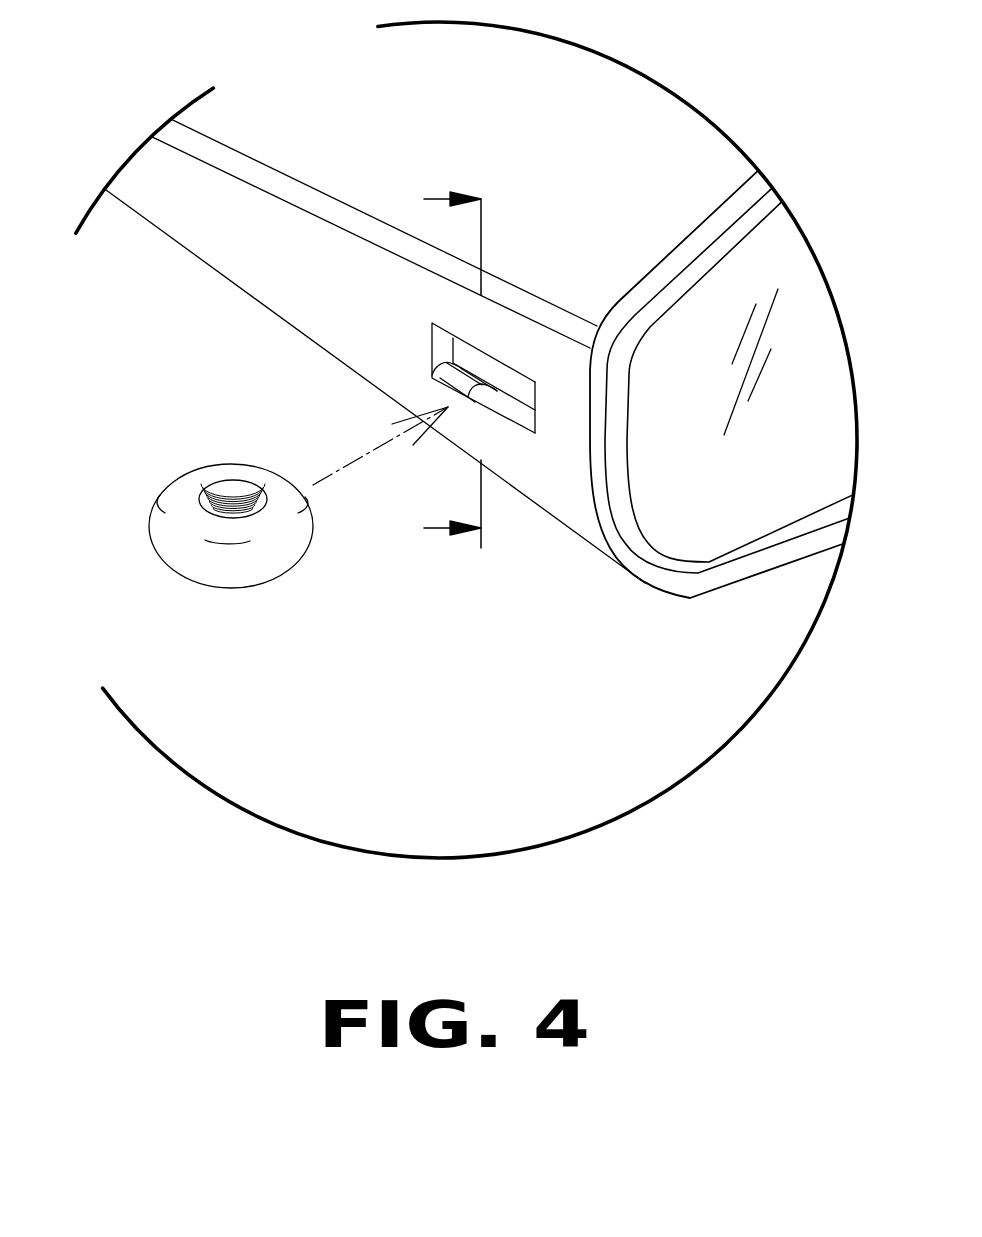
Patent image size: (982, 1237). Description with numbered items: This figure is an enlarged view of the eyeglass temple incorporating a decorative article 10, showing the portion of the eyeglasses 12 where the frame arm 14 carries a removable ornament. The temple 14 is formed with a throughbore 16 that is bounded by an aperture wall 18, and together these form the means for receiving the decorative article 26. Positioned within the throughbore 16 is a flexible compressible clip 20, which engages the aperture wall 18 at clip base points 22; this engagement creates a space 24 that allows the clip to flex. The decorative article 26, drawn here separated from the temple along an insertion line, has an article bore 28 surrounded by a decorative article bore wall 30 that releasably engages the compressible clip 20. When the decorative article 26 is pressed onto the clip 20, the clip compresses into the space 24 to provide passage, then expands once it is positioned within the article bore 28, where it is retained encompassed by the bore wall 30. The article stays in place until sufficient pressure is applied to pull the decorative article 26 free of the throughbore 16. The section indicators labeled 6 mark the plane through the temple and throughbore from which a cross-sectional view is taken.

The eyeglass temple incorporating decorative article 10 is at (333, 89).
The eyeglasses 12 is at (680, 597).
The frame arm 14 is at (228, 155).
The aperture bore 16 is at (463, 358).
The aperture wall 18 is at (437, 342).
The compressible clip 20 is at (487, 392).
The clip base 22 is at (482, 394).
The clip 24 is at (537, 434).
The decorative article 26 is at (160, 546).
The article bore 28 is at (235, 512).
The decorative article bore wall 30 is at (235, 483).
The section line 6- 6 is at (439, 363).